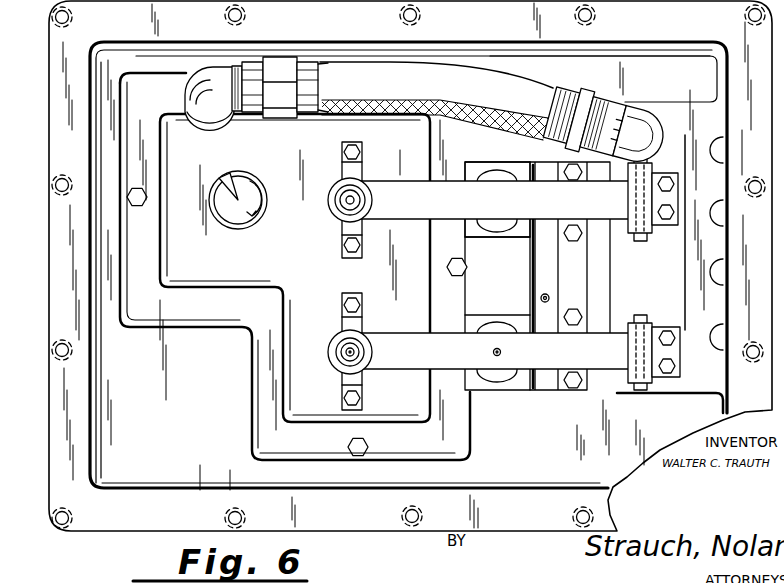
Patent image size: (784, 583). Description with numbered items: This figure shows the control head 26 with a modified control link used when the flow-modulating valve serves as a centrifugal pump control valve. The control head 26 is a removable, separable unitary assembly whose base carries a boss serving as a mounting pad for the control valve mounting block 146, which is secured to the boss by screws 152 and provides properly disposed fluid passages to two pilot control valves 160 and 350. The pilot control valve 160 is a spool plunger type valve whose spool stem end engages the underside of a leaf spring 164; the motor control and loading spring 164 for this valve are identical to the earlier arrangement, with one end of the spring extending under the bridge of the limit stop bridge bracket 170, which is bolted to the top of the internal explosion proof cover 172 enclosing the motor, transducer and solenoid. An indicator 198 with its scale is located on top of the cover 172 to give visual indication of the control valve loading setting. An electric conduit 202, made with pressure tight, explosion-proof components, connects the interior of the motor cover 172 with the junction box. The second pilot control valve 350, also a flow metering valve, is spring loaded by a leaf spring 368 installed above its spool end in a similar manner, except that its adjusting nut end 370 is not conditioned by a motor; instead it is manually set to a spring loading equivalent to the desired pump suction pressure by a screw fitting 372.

The control head 26 is at (57, 294).
The internal explosion proof cover 172 is at (240, 277).
The indicator 198 is at (212, 209).
The control valve mounting block 146 is at (532, 268).
The pilot control valve 160 is at (507, 167).
The screws 152 is at (572, 242).
The limit stop bridge bracket 170 is at (345, 225).
The leaf spring 164 is at (388, 182).
The adjusting nut end 370 is at (357, 336).
The leaf spring 368 is at (420, 325).
The pilot control valve 350 is at (508, 300).
The screw fitting 372 is at (340, 338).
The electric conduit 202 is at (328, 116).